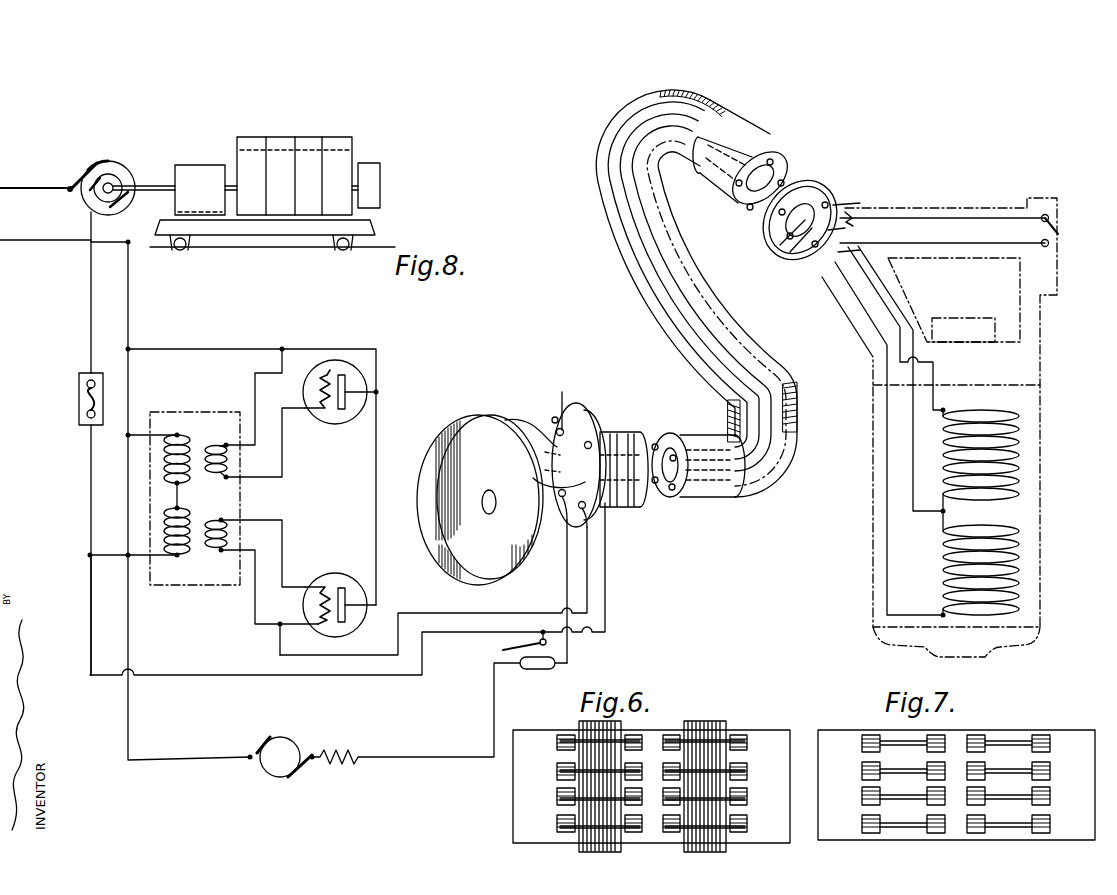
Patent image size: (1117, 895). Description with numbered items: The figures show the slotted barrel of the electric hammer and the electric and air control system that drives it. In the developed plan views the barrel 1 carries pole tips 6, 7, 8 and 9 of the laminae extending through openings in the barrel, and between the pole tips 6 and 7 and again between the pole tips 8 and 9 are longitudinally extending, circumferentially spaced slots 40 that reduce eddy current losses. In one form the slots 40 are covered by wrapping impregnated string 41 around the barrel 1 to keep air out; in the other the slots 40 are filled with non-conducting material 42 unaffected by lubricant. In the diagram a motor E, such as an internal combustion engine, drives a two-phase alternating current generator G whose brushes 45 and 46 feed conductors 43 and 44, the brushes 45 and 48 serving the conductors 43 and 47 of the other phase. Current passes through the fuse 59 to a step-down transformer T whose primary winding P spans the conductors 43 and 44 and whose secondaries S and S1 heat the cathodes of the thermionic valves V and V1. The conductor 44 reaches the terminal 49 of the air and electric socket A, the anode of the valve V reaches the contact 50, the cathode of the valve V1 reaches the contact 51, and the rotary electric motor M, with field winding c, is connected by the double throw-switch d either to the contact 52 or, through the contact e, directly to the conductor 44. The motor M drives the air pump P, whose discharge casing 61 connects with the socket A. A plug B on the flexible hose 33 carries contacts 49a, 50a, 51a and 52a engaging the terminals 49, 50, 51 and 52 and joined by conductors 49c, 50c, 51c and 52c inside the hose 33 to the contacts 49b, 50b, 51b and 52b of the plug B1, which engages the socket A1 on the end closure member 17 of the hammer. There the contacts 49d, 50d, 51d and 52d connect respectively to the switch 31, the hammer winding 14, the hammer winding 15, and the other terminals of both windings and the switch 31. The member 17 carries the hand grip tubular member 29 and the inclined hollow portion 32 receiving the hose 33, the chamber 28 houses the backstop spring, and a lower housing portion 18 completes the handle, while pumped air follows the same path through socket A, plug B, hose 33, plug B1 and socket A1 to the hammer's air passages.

In FIG. 6, the barrel 1 is at (772, 733).
In FIG. 7, the barrel 1 is at (836, 738).
In FIG. 6, the pole tip 6 is at (557, 772).
In FIG. 7, the pole tip 6 is at (862, 772).
In FIG. 6, the pole tip 7 is at (642, 770).
In FIG. 7, the pole tip 7 is at (945, 770).
In FIG. 6, the pole tip 8 is at (663, 823).
In FIG. 7, the pole tip 8 is at (967, 824).
In FIG. 6, the pole tip 9 is at (747, 772).
In FIG. 7, the pole tip 9 is at (1050, 772).
In FIG. 8, the motor winding 14 is at (1015, 462).
In FIG. 8, the motor winding 15 is at (1015, 585).
In FIG. 8, the end closure member 17 is at (978, 435).
In FIG. 8, the housing base 18 is at (915, 647).
In FIG. 8, the chamber 28 is at (1000, 325).
In FIG. 8, the hand grip tubular member 29 is at (950, 218).
In FIG. 8, the switch elements 31 is at (1058, 232).
In FIG. 8, the inclined hollow portion 32 is at (835, 305).
In FIG. 8, the flexible air hose 33 is at (675, 288).
In FIG. 6, the slots 40 is at (605, 740).
In FIG. 7, the slots 40 is at (923, 826).
In FIG. 6, the impregnated string 41 is at (590, 740).
In FIG. 7, the non-conducting material 42 is at (903, 797).
In FIG. 8, the conductor 43 is at (38, 240).
In FIG. 8, the conductor 44 is at (91, 300).
In FIG. 8, the brush 45 is at (112, 205).
In FIG. 8, the brush 46 is at (110, 172).
In FIG. 8, the conductor 47 is at (26, 196).
In FIG. 8, the brush 48 is at (82, 175).
In FIG. 8, the terminal 49 is at (588, 441).
In FIG. 8, the contact 49a is at (656, 444).
In FIG. 8, the contact 49b is at (773, 160).
In FIG. 8, the conductor 49c is at (652, 283).
In FIG. 8, the contact 49d is at (850, 208).
In FIG. 8, the contact 50 is at (553, 417).
In FIG. 8, the contact 50a is at (672, 455).
In FIG. 8, the contact 50b is at (750, 210).
In FIG. 8, the conductor 50c is at (735, 315).
In FIG. 8, the contact 50d is at (815, 248).
In FIG. 8, the contact 51 is at (585, 510).
In FIG. 8, the contact 51a is at (672, 490).
In FIG. 8, the contact 51b is at (780, 215).
In FIG. 8, the conductor 51c is at (737, 186).
In FIG. 8, the contact 51d is at (789, 240).
In FIG. 8, the contact 52 is at (562, 498).
In FIG. 8, the contact 52a is at (655, 483).
In FIG. 8, the contact 52b is at (784, 182).
In FIG. 8, the conductor 52c is at (612, 222).
In FIG. 8, the contact 52d is at (827, 202).
In FIG. 8, the fuse 59 is at (79, 400).
In FIG. 8, the discharge passage 61 is at (560, 428).
In FIG. 8, the air and electric socket A is at (600, 445).
In FIG. 8, the socket A1 is at (828, 210).
In FIG. 8, the plug B is at (700, 500).
In FIG. 8, the plug B1 is at (770, 150).
In FIG. 8, the motor E is at (280, 137).
In FIG. 8, the alternating current generator G is at (190, 165).
In FIG. 8, the rotary electric motor M is at (278, 778).
In FIG. 8, the primary winding / air pump P is at (447, 432).
In FIG. 8, the secondary winding S is at (228, 432).
In FIG. 8, the secondary winding S1 is at (221, 520).
In FIG. 8, the step-down transformer T is at (185, 486).
In FIG. 8, the electric valve V is at (330, 424).
In FIG. 8, the electric valve V1 is at (330, 574).
In FIG. 8, the field winding c is at (335, 757).
In FIG. 8, the double throw-switch d is at (535, 669).
In FIG. 8, the contact e is at (519, 643).